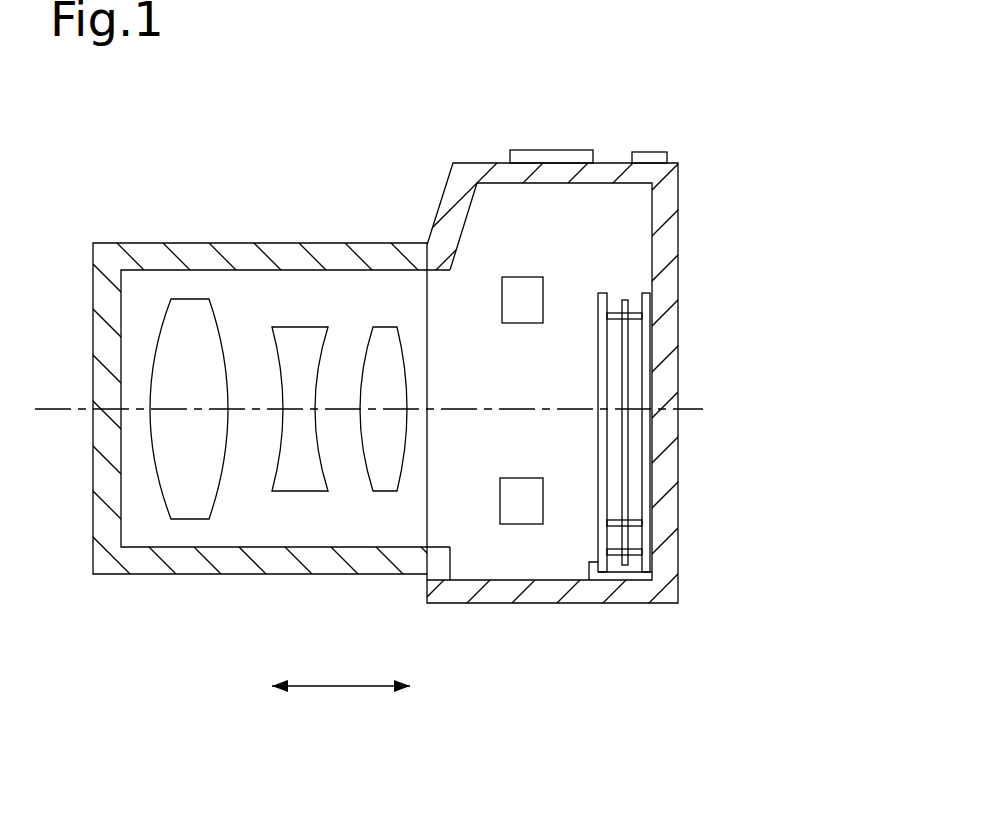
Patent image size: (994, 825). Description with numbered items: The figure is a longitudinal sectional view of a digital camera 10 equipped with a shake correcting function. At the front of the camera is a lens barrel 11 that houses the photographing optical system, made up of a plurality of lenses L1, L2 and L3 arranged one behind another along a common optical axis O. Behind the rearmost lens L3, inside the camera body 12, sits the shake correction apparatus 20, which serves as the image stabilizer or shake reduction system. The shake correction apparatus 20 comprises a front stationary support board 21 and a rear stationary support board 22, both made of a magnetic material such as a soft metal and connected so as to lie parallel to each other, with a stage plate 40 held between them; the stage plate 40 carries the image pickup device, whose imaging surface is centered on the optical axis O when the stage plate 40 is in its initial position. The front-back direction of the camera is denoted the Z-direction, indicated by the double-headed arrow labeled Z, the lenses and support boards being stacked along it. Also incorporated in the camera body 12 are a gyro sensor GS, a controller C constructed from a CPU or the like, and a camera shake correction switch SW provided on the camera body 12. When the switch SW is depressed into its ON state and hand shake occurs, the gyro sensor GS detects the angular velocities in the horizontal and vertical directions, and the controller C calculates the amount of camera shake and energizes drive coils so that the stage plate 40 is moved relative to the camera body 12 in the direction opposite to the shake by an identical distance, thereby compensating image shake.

The digital camera 10 is at (718, 166).
The lens barrel 11 is at (186, 563).
The camera body 12 is at (666, 333).
The shake correction apparatus 20 is at (617, 285).
The front stationary support board 21 is at (600, 520).
The rear stationary support board 22 is at (648, 488).
The stage plate 40 is at (623, 566).
The gyro sensor GS is at (527, 288).
The controller C is at (508, 485).
The camera shake correction switch SW is at (651, 150).
The lens L1 is at (192, 342).
The lens L2 is at (285, 373).
The lens L3 is at (389, 350).
The optical axis O is at (690, 410).
The Z-direction Z is at (338, 690).